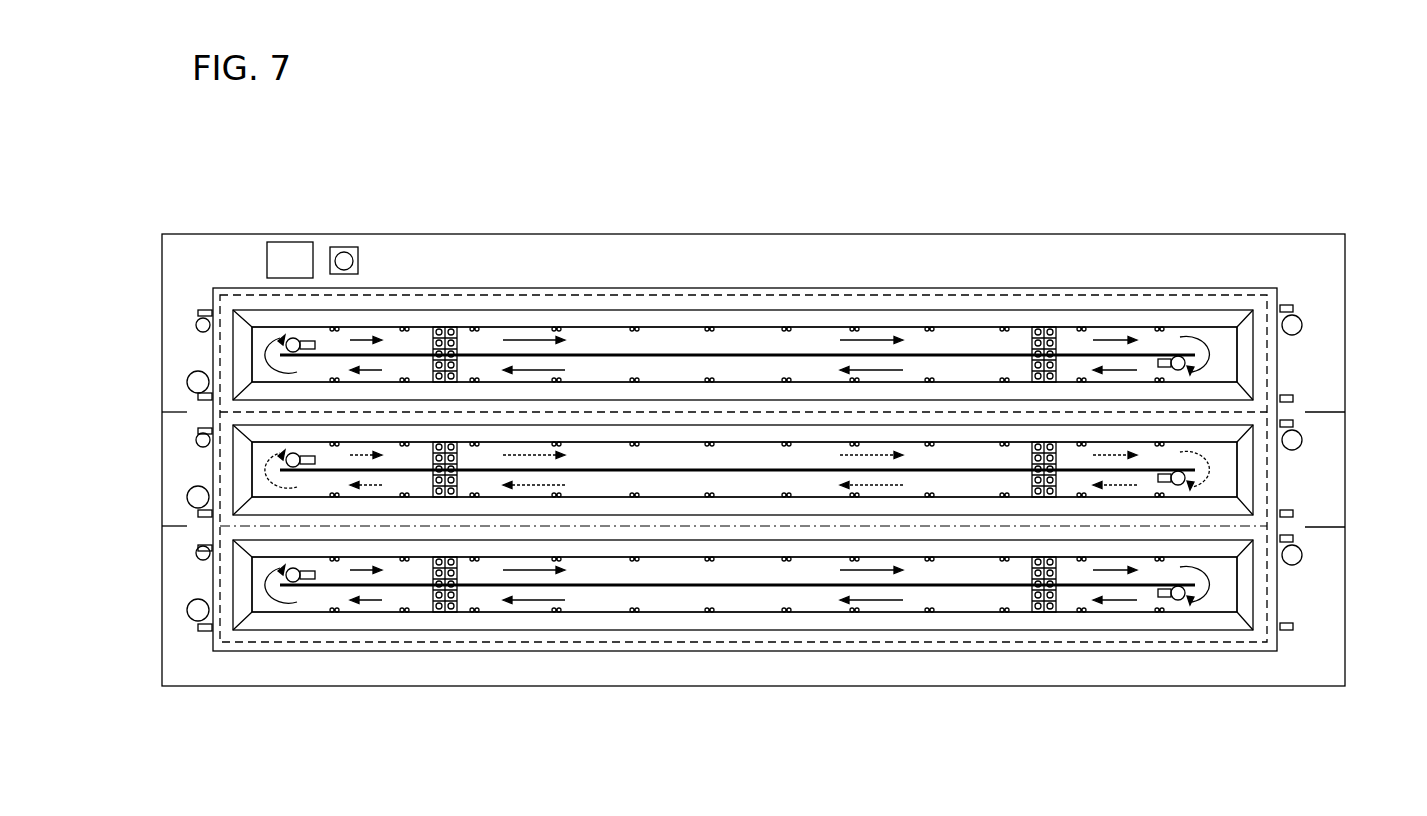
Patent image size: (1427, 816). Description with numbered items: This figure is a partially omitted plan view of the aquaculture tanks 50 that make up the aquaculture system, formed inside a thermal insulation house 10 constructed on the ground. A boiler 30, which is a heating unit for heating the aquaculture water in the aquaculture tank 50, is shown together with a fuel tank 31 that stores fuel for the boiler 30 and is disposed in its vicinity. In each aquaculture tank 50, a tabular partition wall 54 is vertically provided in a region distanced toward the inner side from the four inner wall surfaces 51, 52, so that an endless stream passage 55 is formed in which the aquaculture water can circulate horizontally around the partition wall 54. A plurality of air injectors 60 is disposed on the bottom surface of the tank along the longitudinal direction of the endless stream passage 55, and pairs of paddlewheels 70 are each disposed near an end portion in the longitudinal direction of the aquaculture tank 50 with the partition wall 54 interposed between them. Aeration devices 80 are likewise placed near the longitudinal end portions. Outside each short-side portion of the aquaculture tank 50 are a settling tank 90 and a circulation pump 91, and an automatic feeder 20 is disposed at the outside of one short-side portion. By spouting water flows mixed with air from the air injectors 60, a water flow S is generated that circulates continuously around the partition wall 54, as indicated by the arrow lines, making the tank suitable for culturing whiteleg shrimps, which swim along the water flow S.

The thermal insulation house 10 is at (1346, 338).
The automatic feeder 20 is at (197, 328).
The boiler 30 is at (290, 242).
The fuel tank 31 is at (344, 252).
The aquaculture tank 50 is at (1255, 368).
The inner wall surface 51 is at (243, 363).
The inner wall surface 52 is at (697, 318).
The partition wall 54 is at (748, 352).
The endless stream passage 55 is at (672, 375).
The air injector 60 is at (633, 322).
The paddlewheel 70 is at (444, 327).
The aeration device 80 is at (293, 345).
The settling tank 90 is at (1293, 325).
The circulation pump 91 is at (1287, 305).
The water flow S is at (533, 370).